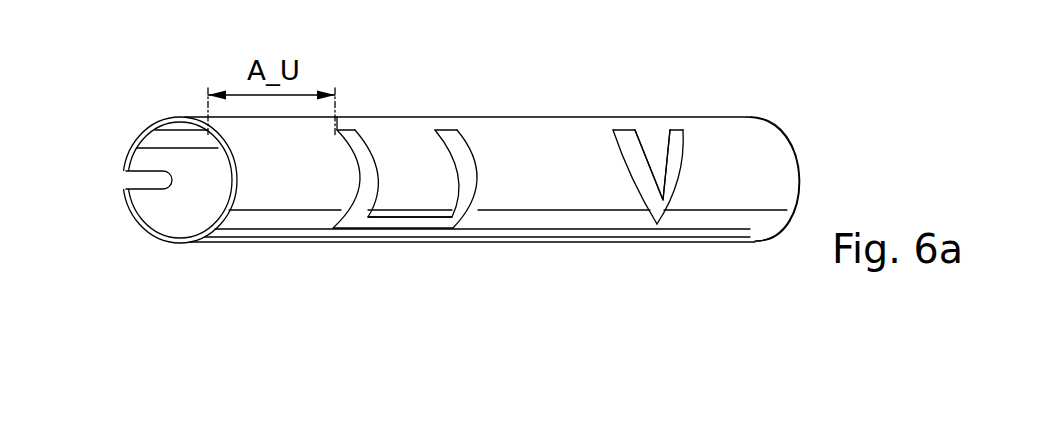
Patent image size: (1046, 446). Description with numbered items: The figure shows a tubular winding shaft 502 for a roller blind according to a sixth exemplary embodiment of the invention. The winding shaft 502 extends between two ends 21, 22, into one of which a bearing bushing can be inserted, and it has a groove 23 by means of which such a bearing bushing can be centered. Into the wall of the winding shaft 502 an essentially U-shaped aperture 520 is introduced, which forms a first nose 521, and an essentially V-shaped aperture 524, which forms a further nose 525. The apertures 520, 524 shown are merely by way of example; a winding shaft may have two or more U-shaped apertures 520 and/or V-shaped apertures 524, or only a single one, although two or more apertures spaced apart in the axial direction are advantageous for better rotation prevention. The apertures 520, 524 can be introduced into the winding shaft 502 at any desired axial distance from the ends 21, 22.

The winding shaft 502 is at (481, 151).
The end of the winding shaft 21 is at (147, 143).
The end of the winding shaft 22 is at (810, 141).
The groove 23 is at (124, 178).
The U-shaped aperture 520 is at (453, 133).
The first nose 521 is at (412, 198).
The V-shaped aperture 524 is at (680, 129).
The further nose 525 is at (663, 163).